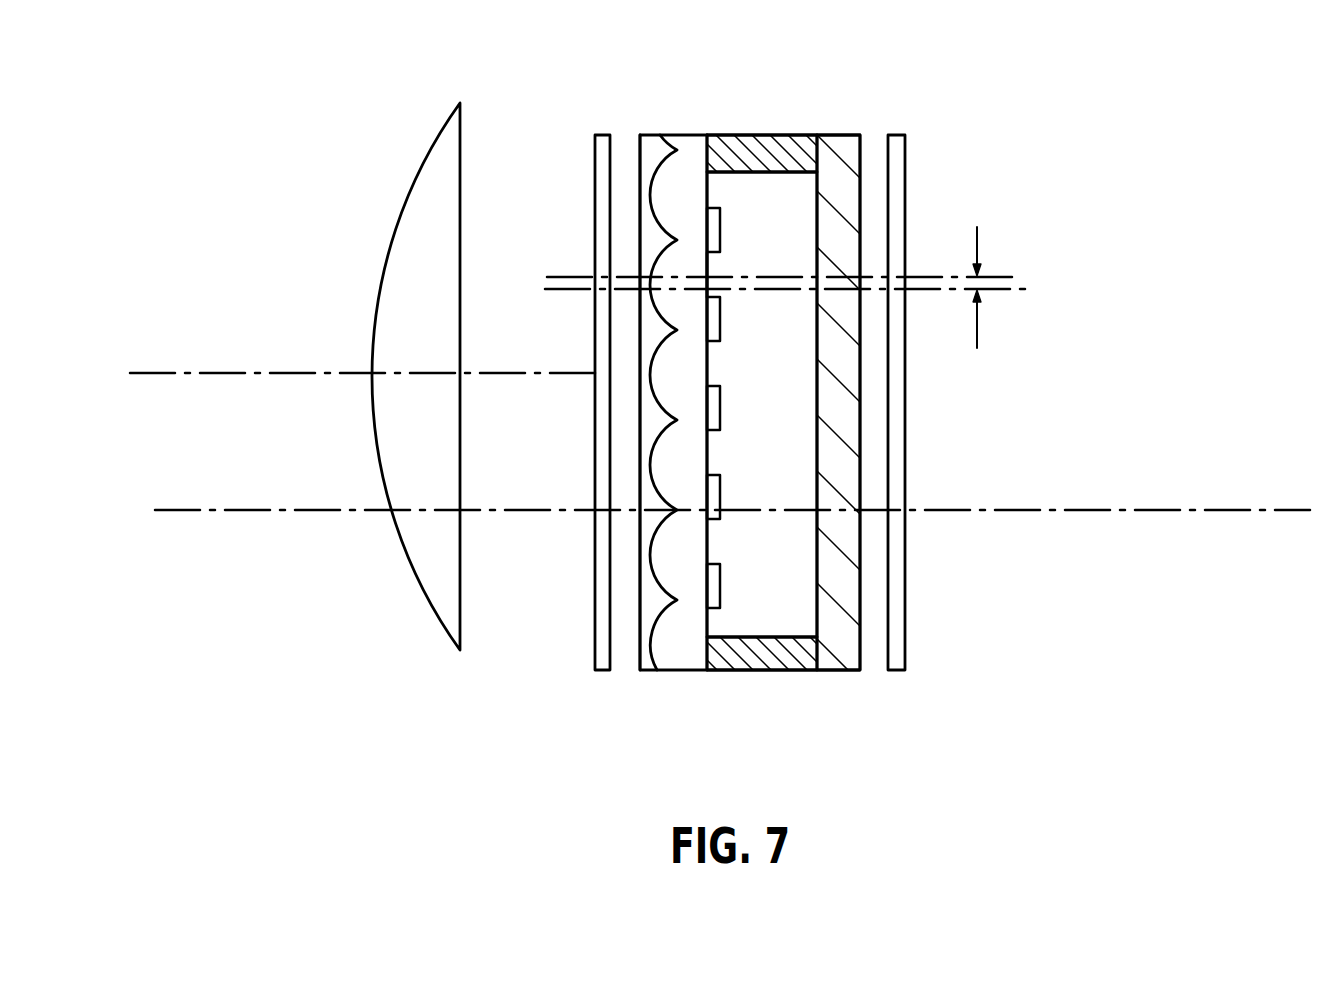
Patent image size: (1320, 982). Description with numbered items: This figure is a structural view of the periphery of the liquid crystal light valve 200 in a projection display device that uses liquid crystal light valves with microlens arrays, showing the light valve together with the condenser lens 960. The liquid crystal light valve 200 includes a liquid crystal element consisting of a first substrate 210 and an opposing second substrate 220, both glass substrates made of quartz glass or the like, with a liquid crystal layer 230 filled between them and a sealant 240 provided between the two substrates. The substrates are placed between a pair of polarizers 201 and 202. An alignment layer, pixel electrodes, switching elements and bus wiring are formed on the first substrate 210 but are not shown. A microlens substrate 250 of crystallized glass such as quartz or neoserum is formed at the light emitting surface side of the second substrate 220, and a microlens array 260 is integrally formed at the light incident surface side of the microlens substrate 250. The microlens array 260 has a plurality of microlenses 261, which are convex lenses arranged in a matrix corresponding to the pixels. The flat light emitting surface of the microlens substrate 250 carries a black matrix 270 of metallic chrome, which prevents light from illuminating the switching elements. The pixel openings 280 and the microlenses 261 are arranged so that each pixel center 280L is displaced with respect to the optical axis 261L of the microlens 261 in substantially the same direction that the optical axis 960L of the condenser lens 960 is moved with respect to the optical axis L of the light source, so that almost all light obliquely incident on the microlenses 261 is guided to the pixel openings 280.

The liquid crystal light valve 200 is at (736, 77).
The polarizer 201 is at (594, 669).
The polarizer 202 is at (905, 671).
The first substrate 210 is at (850, 158).
The second substrate 220 is at (669, 105).
The liquid crystal layer 230 is at (788, 198).
The sealant 240 is at (770, 152).
The microlens substrate 250 is at (677, 652).
The microlens array 260 is at (638, 671).
The microlens 261 is at (652, 398).
The black matrix 270 is at (722, 429).
The pixel opening 280 is at (709, 270).
The pixel center 280L is at (1013, 277).
The optical axis of the microlens 261L is at (1012, 295).
The condenser lens 960 is at (425, 160).
The optical axis of the condenser lens 960L is at (320, 373).
The optical axis of the light source L is at (228, 511).